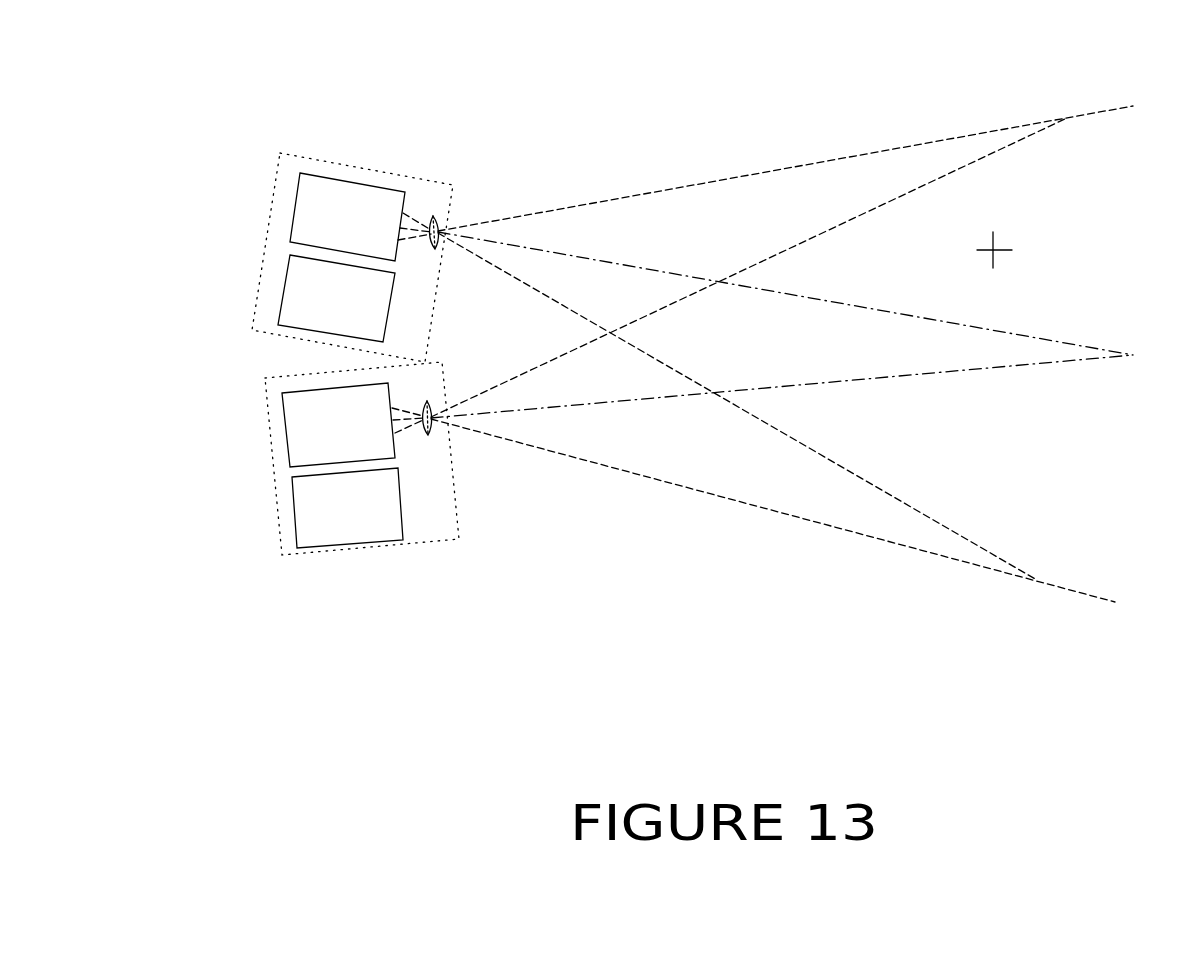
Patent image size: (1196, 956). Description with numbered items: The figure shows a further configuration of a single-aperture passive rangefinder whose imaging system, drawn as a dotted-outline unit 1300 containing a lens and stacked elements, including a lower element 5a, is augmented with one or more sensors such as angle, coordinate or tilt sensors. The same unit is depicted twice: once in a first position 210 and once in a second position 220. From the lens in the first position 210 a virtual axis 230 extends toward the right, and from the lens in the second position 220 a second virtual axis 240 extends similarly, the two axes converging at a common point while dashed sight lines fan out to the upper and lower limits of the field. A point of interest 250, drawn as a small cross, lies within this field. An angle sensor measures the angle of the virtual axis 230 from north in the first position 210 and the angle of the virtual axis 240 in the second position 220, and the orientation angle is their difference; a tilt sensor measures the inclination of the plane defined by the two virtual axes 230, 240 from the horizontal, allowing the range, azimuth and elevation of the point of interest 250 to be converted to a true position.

The imaging unit (camera with lens) 1300 is at (458, 183).
The second position 220 is at (603, 343).
The first position 210 is at (102, 424).
The sensor/element of imaging unit 5a is at (280, 303).
The virtual axis 240 is at (873, 308).
The virtual axis 230 is at (897, 378).
The point of interest 250 is at (1022, 252).